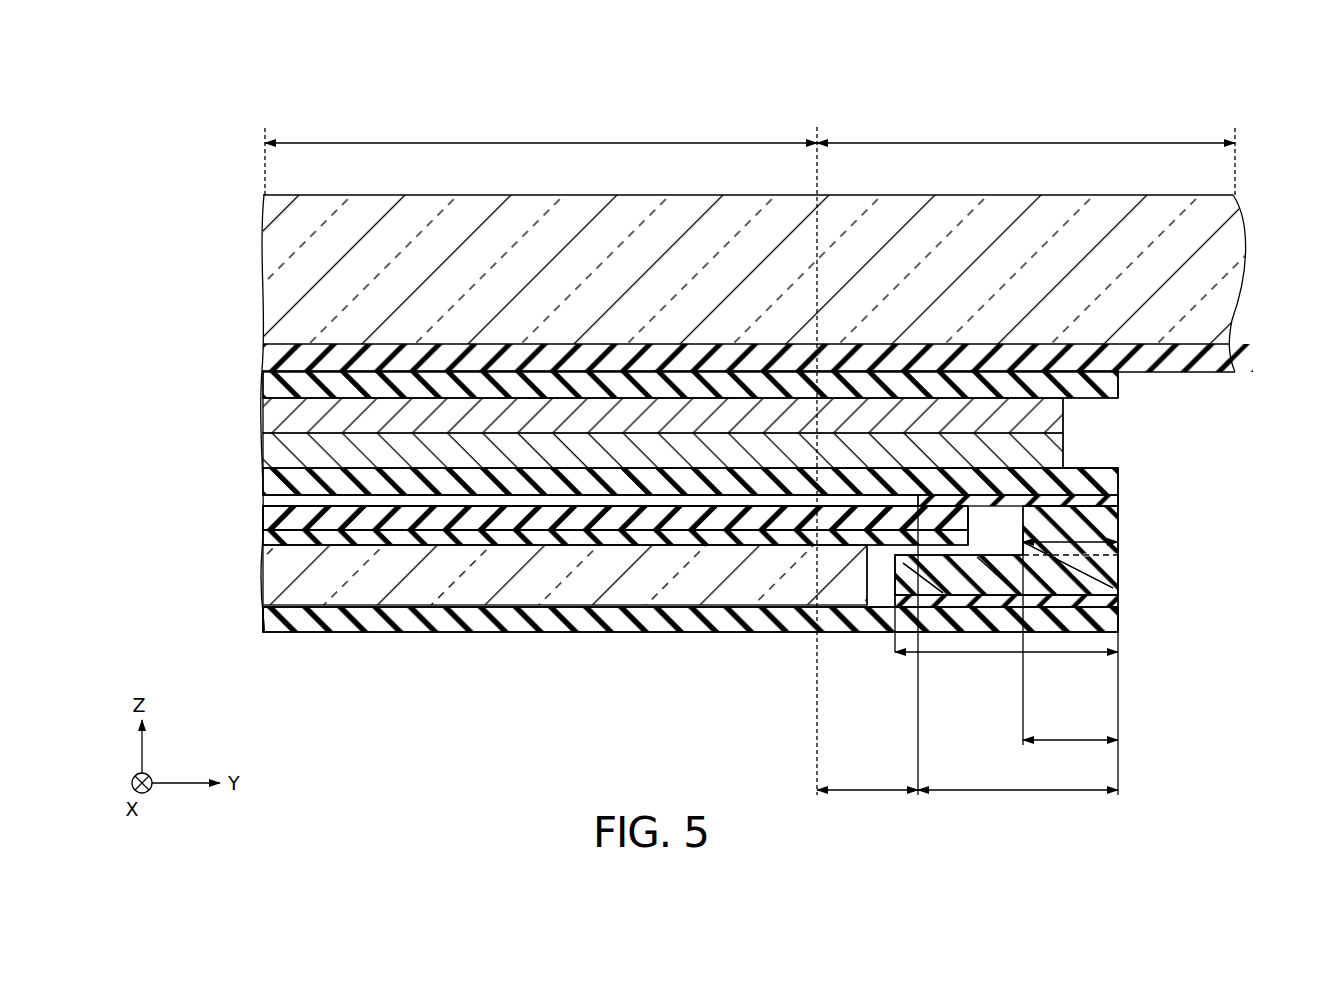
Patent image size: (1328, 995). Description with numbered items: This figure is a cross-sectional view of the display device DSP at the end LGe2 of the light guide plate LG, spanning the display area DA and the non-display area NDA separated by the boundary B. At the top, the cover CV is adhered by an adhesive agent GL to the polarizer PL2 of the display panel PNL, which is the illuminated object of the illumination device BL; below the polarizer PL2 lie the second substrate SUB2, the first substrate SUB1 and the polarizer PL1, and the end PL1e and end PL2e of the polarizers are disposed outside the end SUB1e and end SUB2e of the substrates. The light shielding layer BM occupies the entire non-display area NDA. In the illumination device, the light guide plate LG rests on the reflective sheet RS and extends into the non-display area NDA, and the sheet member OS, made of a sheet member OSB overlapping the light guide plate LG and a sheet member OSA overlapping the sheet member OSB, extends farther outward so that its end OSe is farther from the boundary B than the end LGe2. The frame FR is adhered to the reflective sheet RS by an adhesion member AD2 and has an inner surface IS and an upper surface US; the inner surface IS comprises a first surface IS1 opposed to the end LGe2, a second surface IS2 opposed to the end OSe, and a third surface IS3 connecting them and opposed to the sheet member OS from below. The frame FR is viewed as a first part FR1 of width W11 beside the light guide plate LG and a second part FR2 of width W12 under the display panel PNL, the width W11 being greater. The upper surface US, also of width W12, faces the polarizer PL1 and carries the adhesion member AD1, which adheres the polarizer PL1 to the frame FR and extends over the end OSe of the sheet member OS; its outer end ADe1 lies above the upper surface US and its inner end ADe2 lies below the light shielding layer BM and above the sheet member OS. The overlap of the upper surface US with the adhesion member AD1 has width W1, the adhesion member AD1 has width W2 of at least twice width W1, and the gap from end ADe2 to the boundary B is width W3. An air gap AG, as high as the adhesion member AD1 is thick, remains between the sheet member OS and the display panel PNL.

The cover CV is at (265, 296).
The adhesive agent GL is at (265, 352).
The polarizer PL2 is at (265, 383).
The second substrate SUB2 is at (265, 415).
The first substrate SUB1 is at (265, 450).
The polarizer PL1 is at (265, 485).
The display panel PNL is at (160, 416).
The sheet member OS is at (160, 512).
The sheet member OSA is at (265, 518).
The sheet member OSB is at (265, 540).
The light guide plate LG is at (265, 580).
The reflective sheet RS is at (265, 615).
The air gap AG is at (530, 500).
The adhesion member AD1 is at (1118, 503).
The adhesion member AD2 is at (1100, 602).
The frame FR is at (1120, 553).
The first part FR1 is at (1095, 585).
The second part FR2 is at (1100, 524).
The illumination device BL is at (1222, 554).
The light shielding layer BM is at (1065, 443).
The upper surface US is at (1118, 474).
The end of polarizer PL1e is at (1118, 486).
The end of polarizer PL2e is at (1120, 386).
The end of first substrate SUB1e is at (1065, 458).
The end of second substrate SUB2e is at (1065, 403).
The end of adhesion member ADe1 is at (1118, 497).
The end of adhesion member ADe2 is at (915, 503).
The end of sheet member OSe is at (969, 515).
The end of light guide plate LGe2 is at (868, 588).
The inner surface IS is at (1203, 648).
The first surface IS1 is at (985, 612).
The second surface IS2 is at (1070, 598).
The third surface IS3 is at (1040, 598).
The display device DSP is at (1220, 110).
The display area DA is at (571, 143).
The non-display area NDA is at (1035, 143).
The boundary B is at (814, 447).
The width W1 is at (1070, 751).
The width W2 is at (1018, 803).
The width W3 is at (867, 803).
The width W11 is at (965, 652).
The width W12 is at (1070, 529).